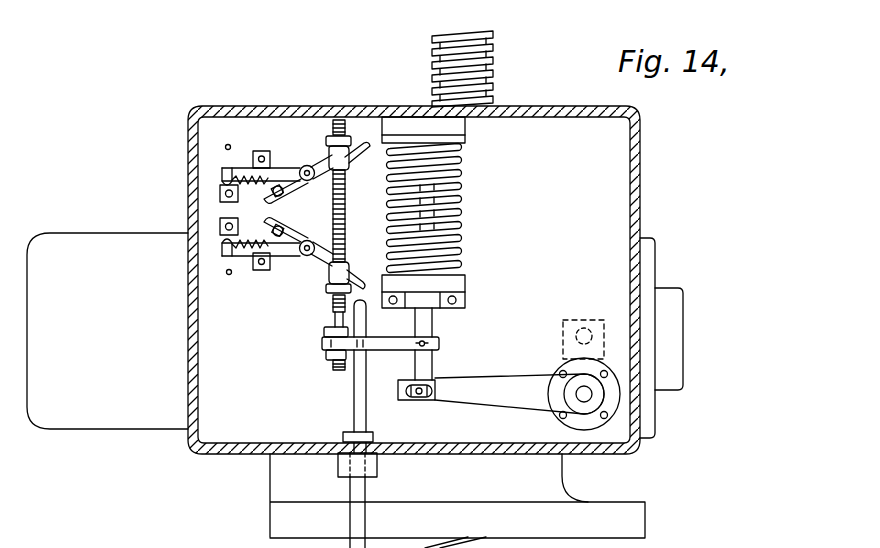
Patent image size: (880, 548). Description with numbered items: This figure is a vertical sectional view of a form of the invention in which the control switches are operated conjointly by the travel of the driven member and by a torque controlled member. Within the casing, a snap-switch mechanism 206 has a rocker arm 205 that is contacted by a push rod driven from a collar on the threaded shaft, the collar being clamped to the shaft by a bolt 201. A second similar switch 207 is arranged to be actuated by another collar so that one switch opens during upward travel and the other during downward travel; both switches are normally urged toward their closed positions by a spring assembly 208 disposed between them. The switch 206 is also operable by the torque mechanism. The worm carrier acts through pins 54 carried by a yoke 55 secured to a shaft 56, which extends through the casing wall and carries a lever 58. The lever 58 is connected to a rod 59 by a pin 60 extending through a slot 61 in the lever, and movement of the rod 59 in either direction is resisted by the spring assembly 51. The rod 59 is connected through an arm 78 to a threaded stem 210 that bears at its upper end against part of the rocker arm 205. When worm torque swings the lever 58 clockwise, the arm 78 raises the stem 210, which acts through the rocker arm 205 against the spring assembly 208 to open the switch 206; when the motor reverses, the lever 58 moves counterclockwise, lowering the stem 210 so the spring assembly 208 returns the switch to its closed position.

The spring assembly 51 is at (462, 245).
The pins 54 is at (589, 318).
The yoke 55 is at (566, 320).
The shaft 56 is at (584, 395).
The lever 58 is at (512, 380).
The rod 59 is at (428, 363).
The pin 60 is at (421, 395).
The slot 61 is at (410, 398).
The arm 78 is at (394, 346).
The bolt 201 is at (332, 424).
The rocker arm 205 is at (318, 259).
The snap-switch mechanism 206 is at (249, 265).
The second switch 207 is at (316, 156).
The spring assembly 208 is at (343, 200).
The threaded stem 210 is at (327, 315).